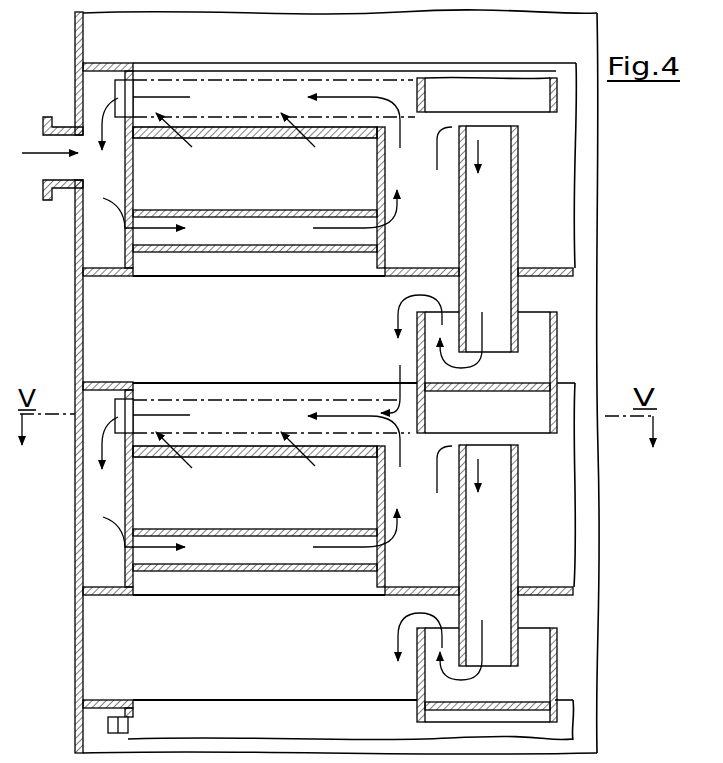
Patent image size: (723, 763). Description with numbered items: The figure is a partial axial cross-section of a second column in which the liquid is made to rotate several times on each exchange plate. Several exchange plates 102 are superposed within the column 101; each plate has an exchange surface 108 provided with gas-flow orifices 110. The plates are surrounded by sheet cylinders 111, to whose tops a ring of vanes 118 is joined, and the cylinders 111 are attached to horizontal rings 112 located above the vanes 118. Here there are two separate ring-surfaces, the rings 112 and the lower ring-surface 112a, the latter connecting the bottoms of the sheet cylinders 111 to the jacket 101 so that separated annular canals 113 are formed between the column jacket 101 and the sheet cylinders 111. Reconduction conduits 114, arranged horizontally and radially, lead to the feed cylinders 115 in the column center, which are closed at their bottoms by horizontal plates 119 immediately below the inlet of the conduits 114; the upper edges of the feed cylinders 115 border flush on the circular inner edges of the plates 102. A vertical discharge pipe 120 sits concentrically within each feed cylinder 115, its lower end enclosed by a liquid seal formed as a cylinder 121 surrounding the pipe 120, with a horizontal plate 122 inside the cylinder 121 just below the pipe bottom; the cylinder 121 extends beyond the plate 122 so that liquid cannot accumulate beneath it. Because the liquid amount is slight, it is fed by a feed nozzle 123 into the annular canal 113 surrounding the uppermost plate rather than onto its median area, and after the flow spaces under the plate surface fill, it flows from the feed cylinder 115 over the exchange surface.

The column 101 is at (78, 332).
The exchange plate 102 is at (259, 140).
The exchange surface 108 is at (255, 320).
The gas-flow orifices 110 is at (255, 320).
The sheet cylinders 111 is at (133, 173).
The horizontal rings 112 is at (97, 63).
The ring-surface 112a is at (105, 276).
The annular canals 113 is at (98, 248).
The reconduction conduits 114 is at (247, 252).
The feed cylinders 115 is at (378, 193).
The ring of vanes 118 is at (118, 92).
The horizontal plates 119 is at (400, 277).
The vertical discharge pipe 120 is at (518, 190).
The cylinders 121 is at (557, 335).
The horizontal plate 122 is at (495, 388).
The feed nozzle 123 is at (62, 127).